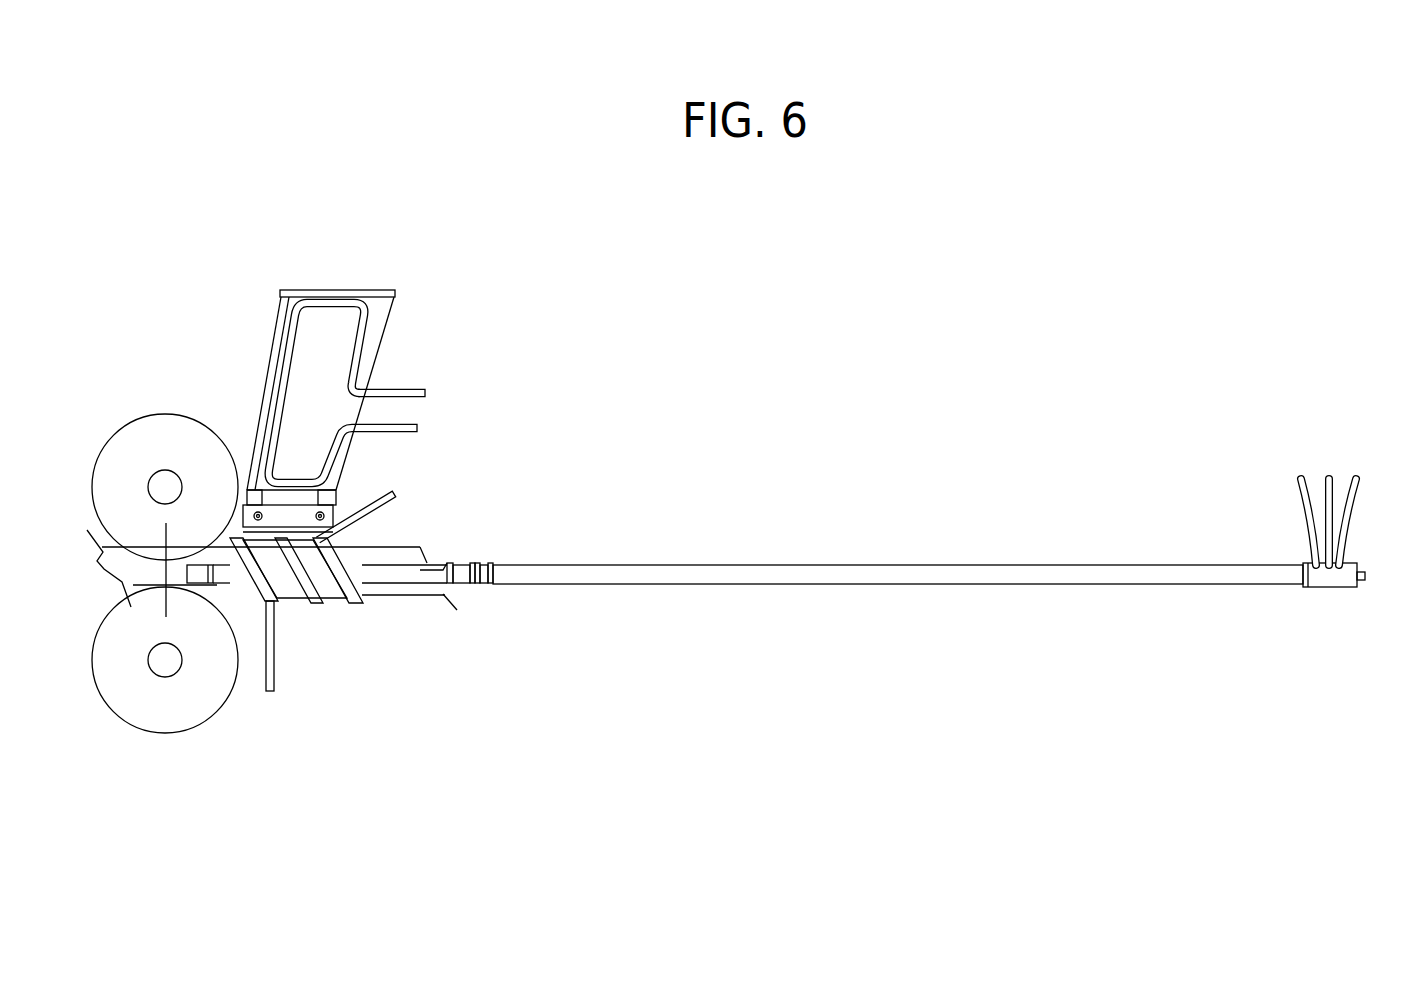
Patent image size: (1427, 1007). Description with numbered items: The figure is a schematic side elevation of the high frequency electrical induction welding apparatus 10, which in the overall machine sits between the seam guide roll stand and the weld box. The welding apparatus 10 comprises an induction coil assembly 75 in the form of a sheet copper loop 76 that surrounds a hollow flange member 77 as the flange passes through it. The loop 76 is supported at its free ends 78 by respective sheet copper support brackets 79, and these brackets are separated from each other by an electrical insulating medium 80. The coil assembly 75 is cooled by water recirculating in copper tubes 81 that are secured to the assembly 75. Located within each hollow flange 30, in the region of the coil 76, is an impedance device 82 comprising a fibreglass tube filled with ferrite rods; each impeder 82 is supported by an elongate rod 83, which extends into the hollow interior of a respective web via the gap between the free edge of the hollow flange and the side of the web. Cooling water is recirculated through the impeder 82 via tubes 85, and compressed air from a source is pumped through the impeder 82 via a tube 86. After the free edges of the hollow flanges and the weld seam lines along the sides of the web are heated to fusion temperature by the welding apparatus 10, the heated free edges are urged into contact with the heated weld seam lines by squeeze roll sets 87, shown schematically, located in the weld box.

The high frequency electrical induction welding apparatus 10 is at (963, 317).
The hollow flange 30 is at (143, 567).
The induction coil assembly 75 is at (443, 240).
The sheet copper loop 76 is at (280, 580).
The hollow flange member 77 is at (388, 552).
The free ends 78 is at (293, 510).
The sheet copper support brackets 79 is at (335, 333).
The electrical insulating medium 80 is at (275, 346).
The copper tubes 81 is at (407, 390).
The impedance device 82 is at (380, 577).
The elongate rod 83 is at (766, 584).
The tubes 85 is at (1330, 478).
The tube 86 is at (1353, 508).
The squeeze roll sets 87 is at (136, 410).